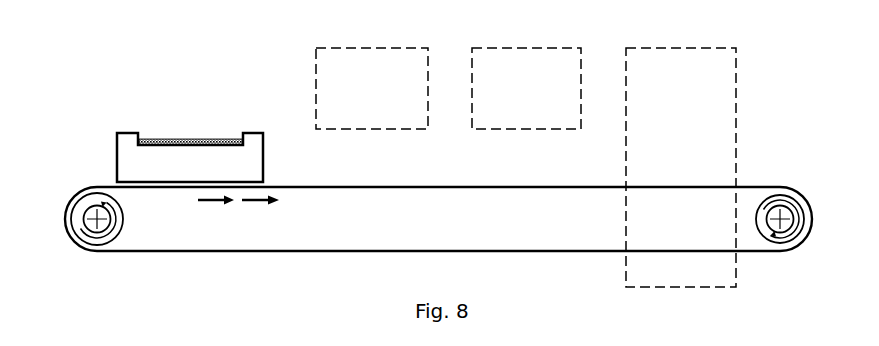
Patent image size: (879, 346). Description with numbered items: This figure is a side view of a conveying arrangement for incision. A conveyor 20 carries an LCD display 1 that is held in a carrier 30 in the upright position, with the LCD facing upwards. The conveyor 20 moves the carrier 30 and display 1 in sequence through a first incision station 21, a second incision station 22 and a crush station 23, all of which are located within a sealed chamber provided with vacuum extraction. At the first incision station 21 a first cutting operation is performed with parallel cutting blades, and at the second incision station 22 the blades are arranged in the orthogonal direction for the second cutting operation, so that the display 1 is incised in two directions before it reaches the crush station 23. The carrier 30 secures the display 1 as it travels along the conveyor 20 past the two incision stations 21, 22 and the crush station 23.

The LCD display 1 is at (147, 115).
The conveyor 20 is at (158, 251).
The first incision station 21 is at (317, 69).
The second incision station 22 is at (520, 129).
The crush station 23 is at (737, 112).
The carrier 30 is at (117, 162).